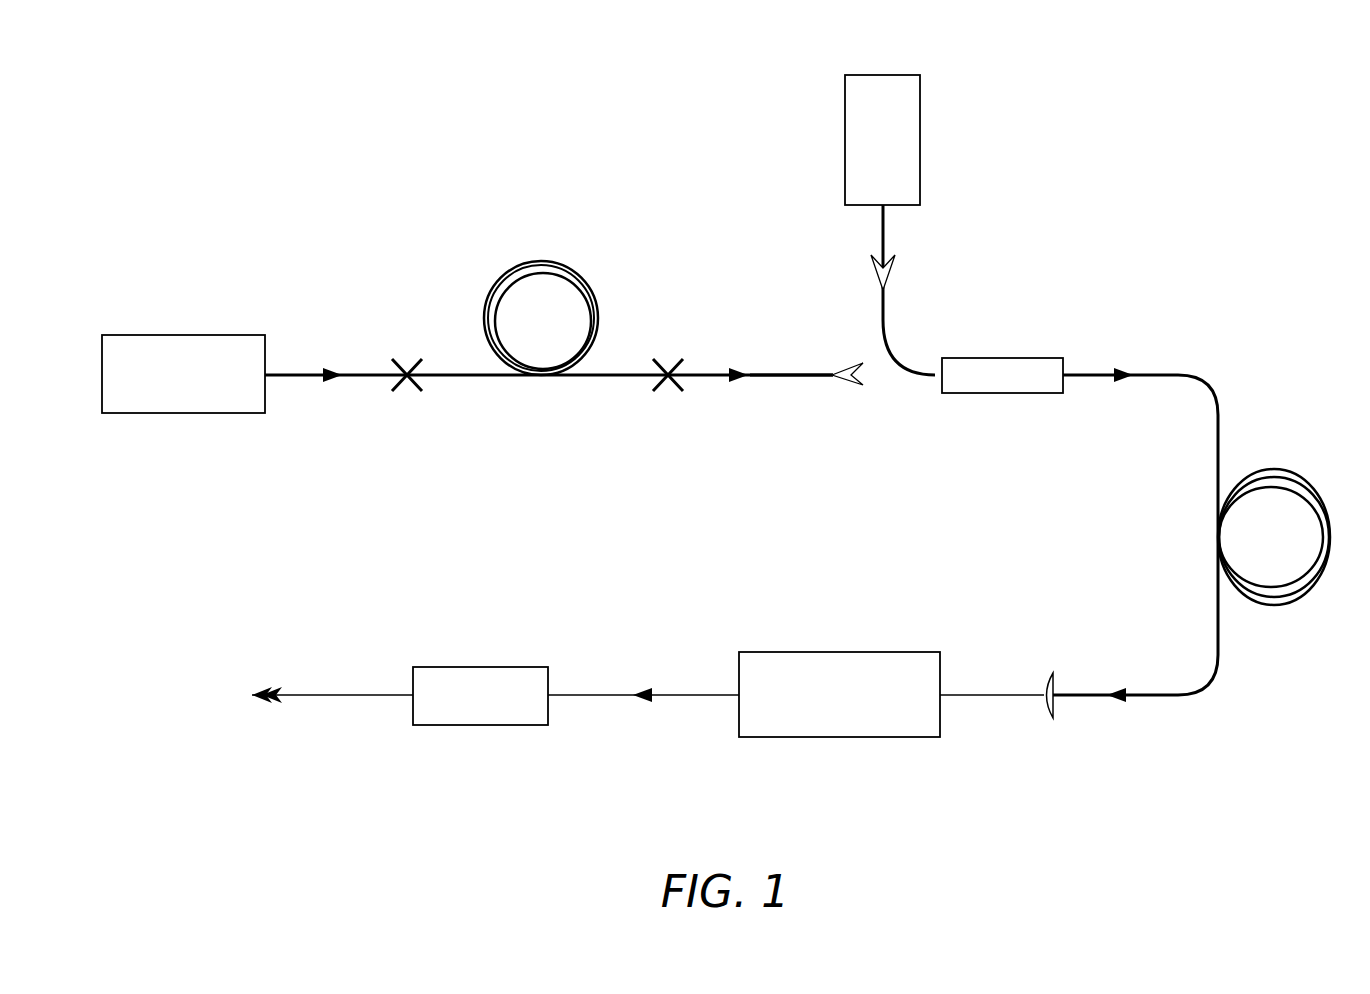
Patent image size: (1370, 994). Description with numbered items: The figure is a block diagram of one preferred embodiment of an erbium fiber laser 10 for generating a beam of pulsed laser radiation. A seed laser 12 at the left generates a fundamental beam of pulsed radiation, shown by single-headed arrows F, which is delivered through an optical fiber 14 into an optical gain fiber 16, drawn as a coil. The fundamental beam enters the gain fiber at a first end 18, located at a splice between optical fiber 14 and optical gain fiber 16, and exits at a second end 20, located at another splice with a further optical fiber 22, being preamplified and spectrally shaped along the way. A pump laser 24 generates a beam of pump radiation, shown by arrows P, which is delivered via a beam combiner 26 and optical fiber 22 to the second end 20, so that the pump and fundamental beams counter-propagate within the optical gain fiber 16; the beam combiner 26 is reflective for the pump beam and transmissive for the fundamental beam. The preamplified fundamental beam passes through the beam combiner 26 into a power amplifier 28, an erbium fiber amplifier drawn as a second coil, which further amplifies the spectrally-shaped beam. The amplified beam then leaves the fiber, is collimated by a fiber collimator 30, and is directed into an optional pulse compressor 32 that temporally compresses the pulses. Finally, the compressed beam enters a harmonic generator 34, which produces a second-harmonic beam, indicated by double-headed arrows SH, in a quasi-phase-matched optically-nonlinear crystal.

The fiber laser 10 is at (244, 133).
The seed laser 12 is at (155, 335).
The optical fiber 14 is at (297, 380).
The optical gain fiber 16 is at (578, 268).
The first end 18 is at (408, 393).
The second end 20 is at (667, 393).
The optical fiber 22 is at (790, 382).
The pump laser 24 is at (845, 103).
The beam combiner 26 is at (1035, 360).
The power amplifier 28 is at (1287, 468).
The fiber collimator 30 is at (1052, 670).
The pulse compressor 32 is at (797, 652).
The harmonic generator 34 is at (508, 667).